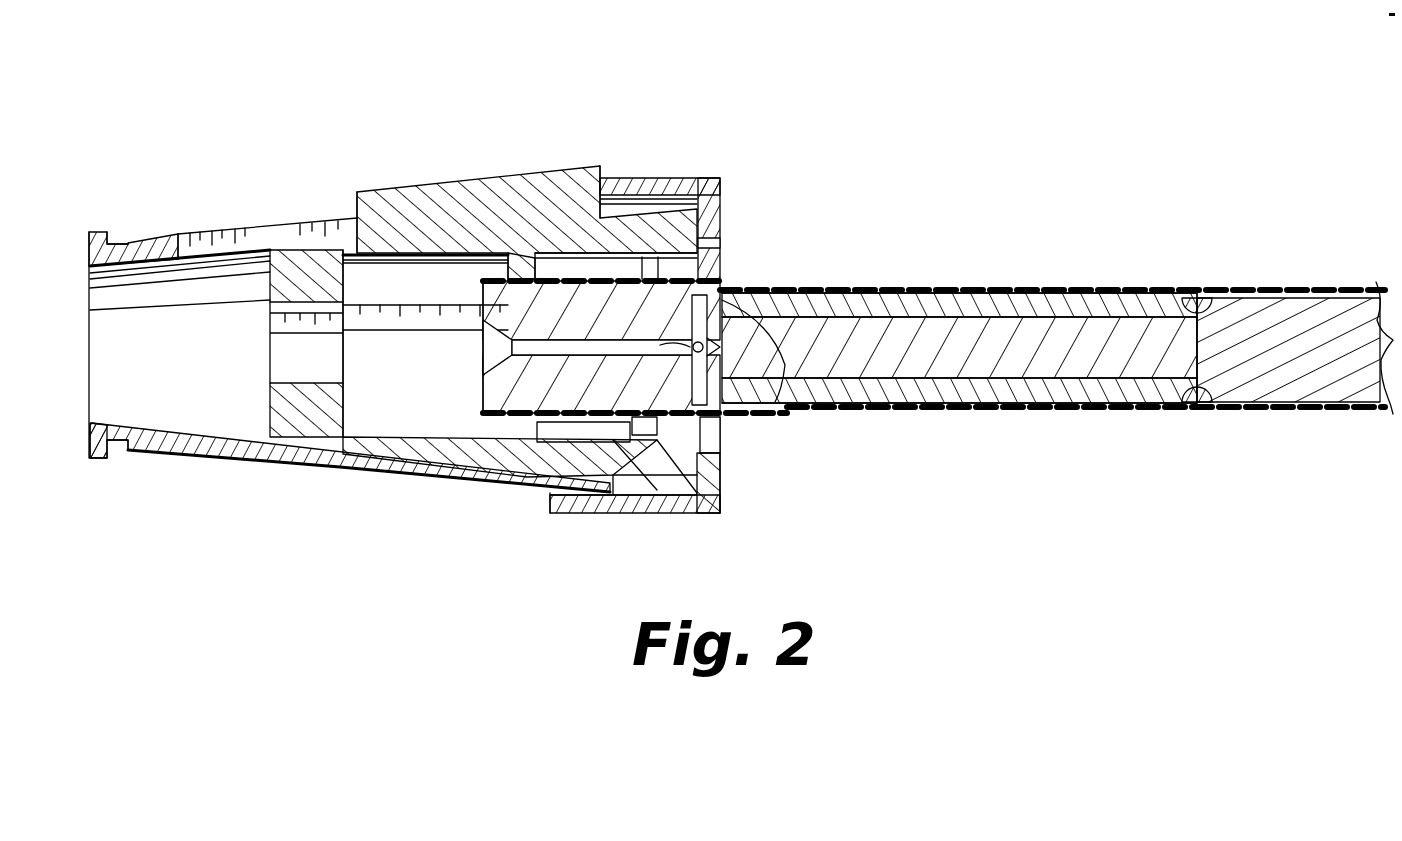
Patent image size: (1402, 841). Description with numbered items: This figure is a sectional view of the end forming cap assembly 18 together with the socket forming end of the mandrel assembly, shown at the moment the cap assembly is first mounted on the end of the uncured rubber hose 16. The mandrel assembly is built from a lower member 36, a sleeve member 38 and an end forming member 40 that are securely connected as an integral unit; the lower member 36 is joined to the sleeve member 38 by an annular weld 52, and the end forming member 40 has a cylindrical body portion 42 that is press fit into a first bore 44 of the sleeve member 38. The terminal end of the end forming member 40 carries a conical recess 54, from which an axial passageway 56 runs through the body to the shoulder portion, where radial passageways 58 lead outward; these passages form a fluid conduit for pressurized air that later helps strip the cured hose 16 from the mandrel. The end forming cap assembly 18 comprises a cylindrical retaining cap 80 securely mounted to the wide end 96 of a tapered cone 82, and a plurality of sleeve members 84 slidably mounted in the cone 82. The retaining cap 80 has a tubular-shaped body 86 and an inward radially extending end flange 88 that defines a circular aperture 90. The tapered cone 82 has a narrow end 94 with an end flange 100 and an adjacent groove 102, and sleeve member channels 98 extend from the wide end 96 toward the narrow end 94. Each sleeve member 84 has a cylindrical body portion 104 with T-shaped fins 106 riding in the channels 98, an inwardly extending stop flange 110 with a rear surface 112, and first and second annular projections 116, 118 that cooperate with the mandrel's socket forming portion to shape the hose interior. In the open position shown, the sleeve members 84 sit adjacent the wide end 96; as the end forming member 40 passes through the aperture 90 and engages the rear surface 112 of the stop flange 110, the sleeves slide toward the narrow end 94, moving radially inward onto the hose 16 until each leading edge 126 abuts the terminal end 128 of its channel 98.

The hose 16 is at (1053, 418).
The end forming cap assembly 18 is at (290, 170).
The lower member 36 is at (1325, 378).
The sleeve member 38 is at (900, 300).
The end forming member 40 is at (648, 310).
The cylindrical body portion 42 is at (935, 392).
The first bore 44 is at (1095, 300).
The annular weld 52 is at (1200, 298).
The conical recess 54 is at (482, 358).
The axial passageway 56 is at (790, 388).
The radial passageways 58 is at (703, 345).
The retaining cap 80 is at (672, 515).
The tapered cone 82 is at (257, 470).
The sleeve members 84 is at (594, 168).
The tubular-shaped body 86 is at (640, 178).
The end flange 88 is at (722, 480).
The circular aperture 90 is at (722, 430).
The narrow end 94 is at (88, 437).
The wide end 96 is at (605, 505).
The sleeve member channels 98 is at (280, 236).
The end flange 100 is at (100, 230).
The groove 102 is at (115, 244).
The cylindrical body portion 104 is at (436, 482).
The T-shaped fins 106 is at (425, 183).
The stop flange 110 is at (275, 285).
The rear surface 112 is at (355, 275).
The first annular projection 116 is at (535, 263).
The second annular projection 118 is at (718, 222).
The leading edge 126 is at (332, 195).
The terminal end 128 is at (190, 240).